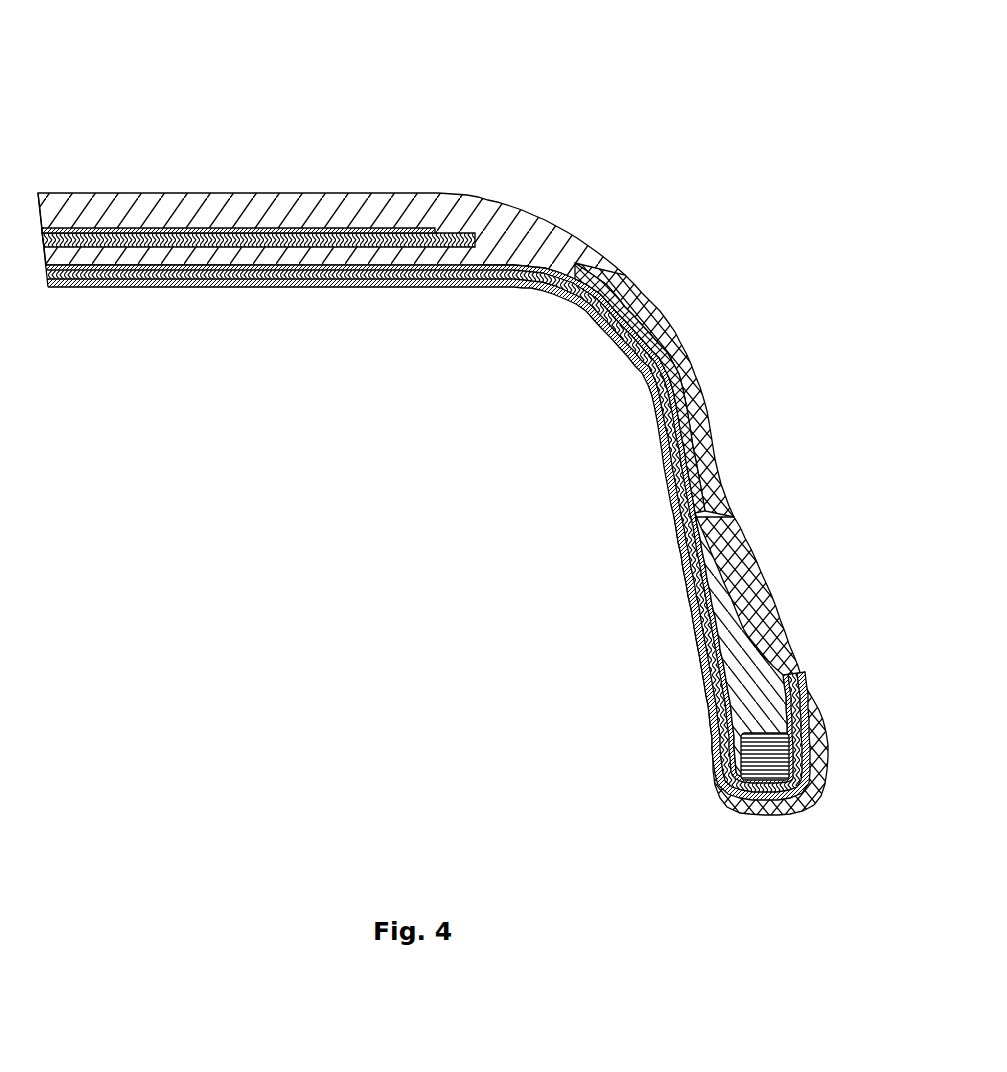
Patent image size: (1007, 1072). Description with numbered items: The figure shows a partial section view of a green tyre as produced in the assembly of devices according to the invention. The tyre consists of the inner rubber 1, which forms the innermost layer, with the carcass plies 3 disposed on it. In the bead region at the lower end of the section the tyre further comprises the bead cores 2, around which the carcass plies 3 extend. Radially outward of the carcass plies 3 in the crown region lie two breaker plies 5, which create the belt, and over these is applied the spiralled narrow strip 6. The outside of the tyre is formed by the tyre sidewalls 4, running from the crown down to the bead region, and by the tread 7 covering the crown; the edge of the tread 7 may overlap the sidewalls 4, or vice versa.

The inner rubber 1 is at (648, 305).
The bead core 2 is at (803, 677).
The carcass ply 3 is at (707, 418).
The tyre sidewall 4 is at (753, 577).
The breaker ply 5 is at (270, 257).
The spiralled narrow strip 6 is at (413, 230).
The tread 7 is at (350, 212).